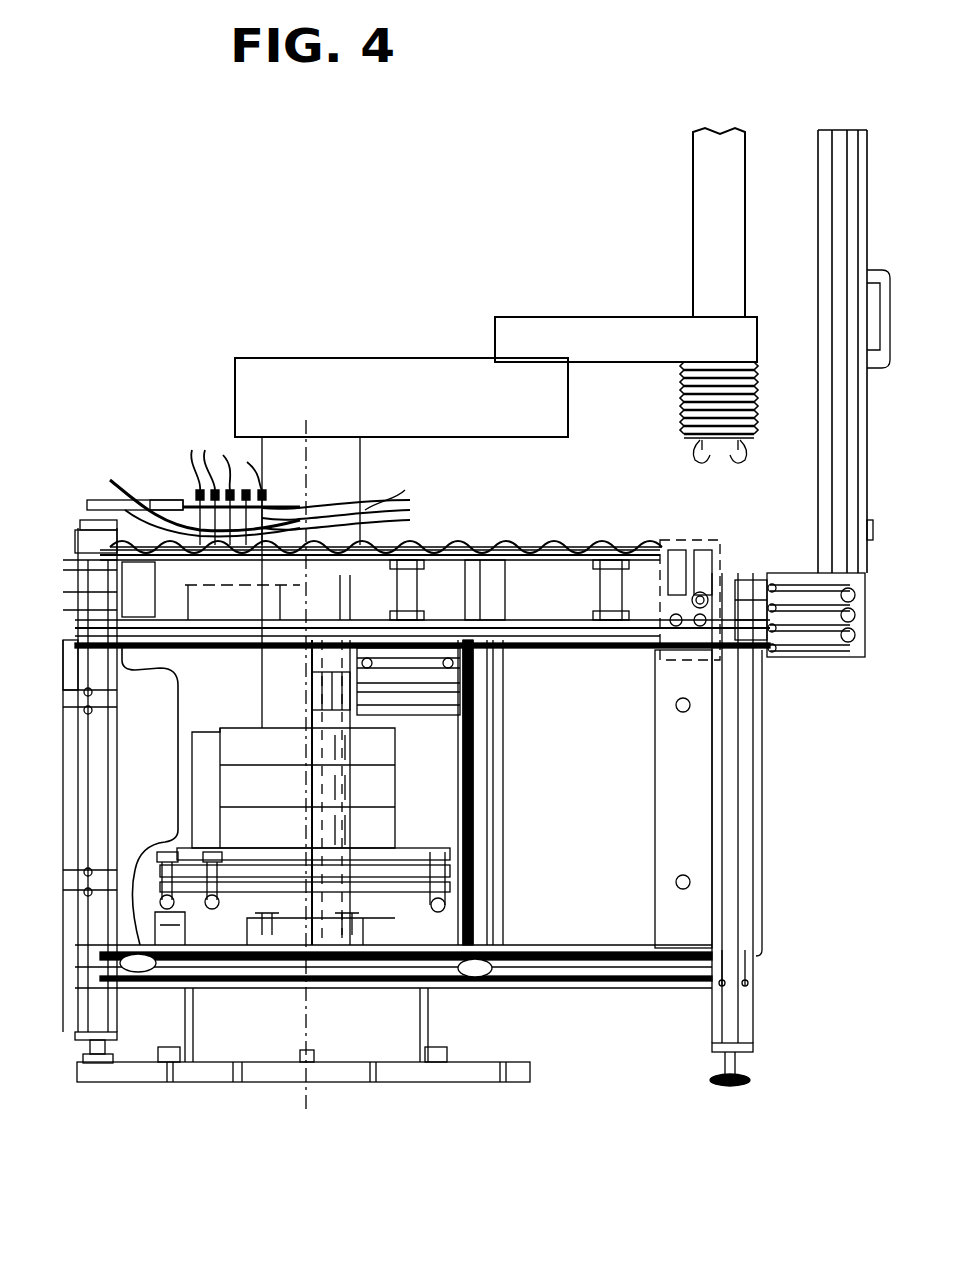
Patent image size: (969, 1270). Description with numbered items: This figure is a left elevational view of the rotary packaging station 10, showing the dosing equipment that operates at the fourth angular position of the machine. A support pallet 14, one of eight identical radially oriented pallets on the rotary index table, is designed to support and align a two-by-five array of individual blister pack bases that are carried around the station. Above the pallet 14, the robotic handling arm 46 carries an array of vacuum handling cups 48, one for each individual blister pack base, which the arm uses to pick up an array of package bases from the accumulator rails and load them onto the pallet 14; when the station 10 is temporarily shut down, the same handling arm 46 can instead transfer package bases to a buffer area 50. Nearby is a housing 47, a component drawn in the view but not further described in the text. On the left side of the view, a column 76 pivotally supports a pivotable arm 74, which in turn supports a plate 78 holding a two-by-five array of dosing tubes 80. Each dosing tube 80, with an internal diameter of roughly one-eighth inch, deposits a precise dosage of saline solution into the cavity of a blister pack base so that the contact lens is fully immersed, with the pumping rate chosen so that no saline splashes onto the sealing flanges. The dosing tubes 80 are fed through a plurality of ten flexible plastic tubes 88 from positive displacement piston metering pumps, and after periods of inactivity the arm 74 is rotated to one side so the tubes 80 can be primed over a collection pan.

The rotary packaging station 10 is at (470, 765).
The support pallet 14 is at (622, 545).
The robotic handling arm 46 is at (648, 384).
The housing 47 is at (313, 470).
The vacuum handling cups 48 is at (719, 428).
The buffer area 50 is at (515, 535).
The pivotable arm 74 is at (160, 497).
The column 76 is at (80, 522).
The plate 78 is at (365, 512).
The dosing tubes 80 is at (264, 491).
The flexible plastic tubes 88 is at (225, 487).